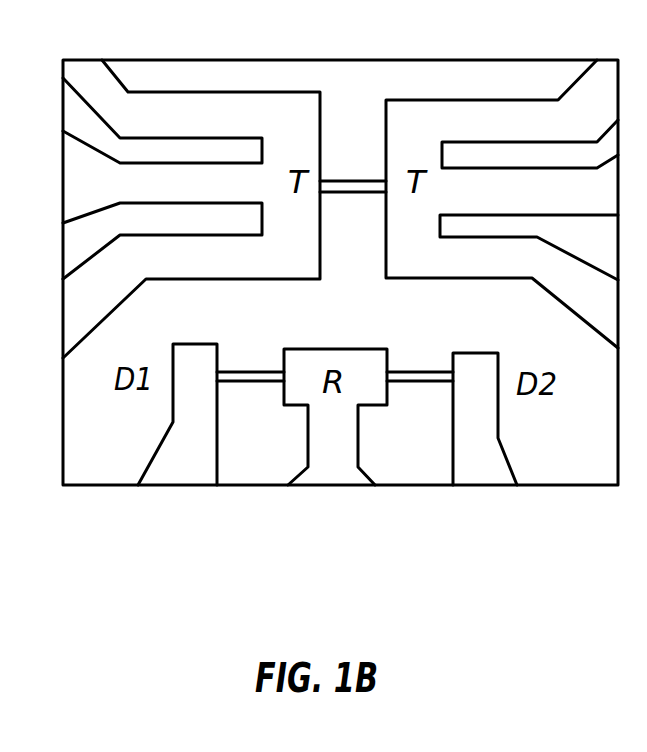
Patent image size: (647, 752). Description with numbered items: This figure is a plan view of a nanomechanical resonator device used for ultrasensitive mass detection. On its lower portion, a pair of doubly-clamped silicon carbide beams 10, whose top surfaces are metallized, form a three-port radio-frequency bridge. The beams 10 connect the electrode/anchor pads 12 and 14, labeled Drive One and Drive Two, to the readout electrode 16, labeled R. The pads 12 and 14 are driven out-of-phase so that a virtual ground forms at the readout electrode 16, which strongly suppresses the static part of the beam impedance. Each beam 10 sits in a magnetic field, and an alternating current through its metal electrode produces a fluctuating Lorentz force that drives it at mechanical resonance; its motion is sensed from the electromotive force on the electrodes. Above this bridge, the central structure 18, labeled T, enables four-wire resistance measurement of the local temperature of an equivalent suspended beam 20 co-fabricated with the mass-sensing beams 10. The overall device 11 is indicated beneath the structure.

The doubly-clamped SiC beam 10 is at (246, 382).
The sensor device / substrate 11 is at (242, 492).
The electrode/anchor pad D1 12 is at (175, 473).
The electrode/anchor pad D2 14 is at (498, 477).
The readout electrode R 16 is at (319, 475).
The central structure T 18 is at (193, 92).
The suspended beam 20 is at (345, 193).